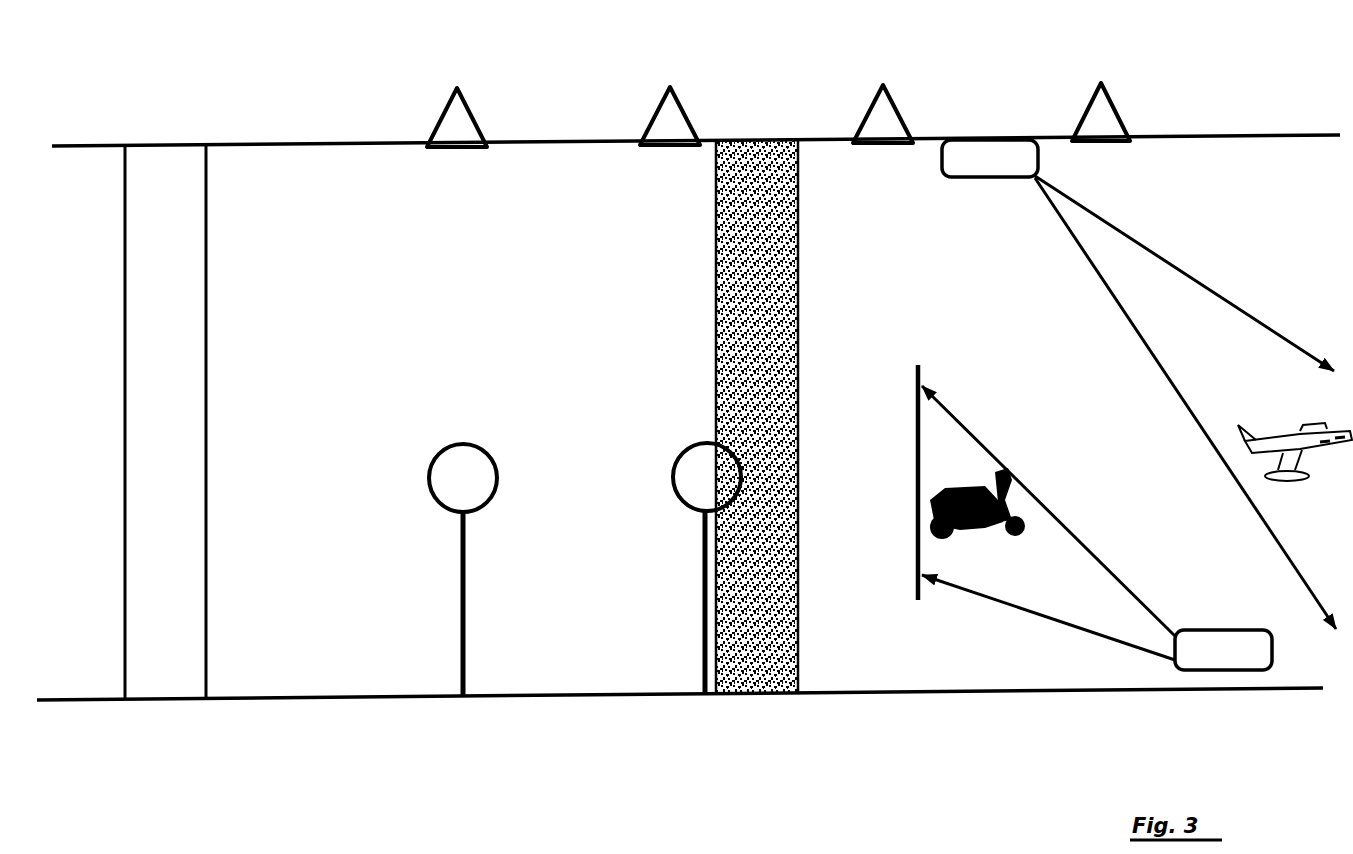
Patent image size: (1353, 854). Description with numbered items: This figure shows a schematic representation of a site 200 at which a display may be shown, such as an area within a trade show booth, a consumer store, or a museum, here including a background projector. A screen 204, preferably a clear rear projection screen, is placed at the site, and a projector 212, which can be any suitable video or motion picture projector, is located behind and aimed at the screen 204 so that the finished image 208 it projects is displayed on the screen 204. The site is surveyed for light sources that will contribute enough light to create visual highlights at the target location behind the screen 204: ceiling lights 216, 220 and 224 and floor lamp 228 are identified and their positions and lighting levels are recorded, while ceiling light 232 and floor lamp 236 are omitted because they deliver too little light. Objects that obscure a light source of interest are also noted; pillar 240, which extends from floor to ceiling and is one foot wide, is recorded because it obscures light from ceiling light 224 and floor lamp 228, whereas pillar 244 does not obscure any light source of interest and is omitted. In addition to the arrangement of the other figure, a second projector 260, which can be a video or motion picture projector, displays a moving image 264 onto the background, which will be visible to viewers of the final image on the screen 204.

The site 200 is at (1160, 200).
The screen 204 is at (914, 400).
The image 208 is at (963, 488).
The projector 212 is at (1097, 528).
The ceiling light 216 is at (1082, 110).
The ceiling light 220 is at (870, 112).
The ceiling light 224 is at (648, 112).
The floor lamp 228 is at (723, 512).
The ceiling light 232 is at (437, 112).
The floor lamp 236 is at (499, 491).
The pillar 240 is at (714, 279).
The pillar 244 is at (208, 283).
The second projector 260 is at (1139, 384).
The moving image 264 is at (1266, 456).